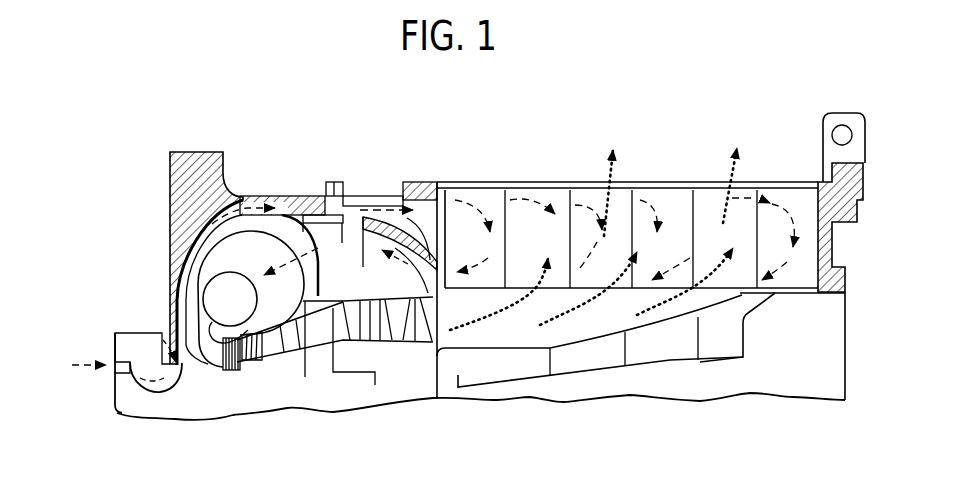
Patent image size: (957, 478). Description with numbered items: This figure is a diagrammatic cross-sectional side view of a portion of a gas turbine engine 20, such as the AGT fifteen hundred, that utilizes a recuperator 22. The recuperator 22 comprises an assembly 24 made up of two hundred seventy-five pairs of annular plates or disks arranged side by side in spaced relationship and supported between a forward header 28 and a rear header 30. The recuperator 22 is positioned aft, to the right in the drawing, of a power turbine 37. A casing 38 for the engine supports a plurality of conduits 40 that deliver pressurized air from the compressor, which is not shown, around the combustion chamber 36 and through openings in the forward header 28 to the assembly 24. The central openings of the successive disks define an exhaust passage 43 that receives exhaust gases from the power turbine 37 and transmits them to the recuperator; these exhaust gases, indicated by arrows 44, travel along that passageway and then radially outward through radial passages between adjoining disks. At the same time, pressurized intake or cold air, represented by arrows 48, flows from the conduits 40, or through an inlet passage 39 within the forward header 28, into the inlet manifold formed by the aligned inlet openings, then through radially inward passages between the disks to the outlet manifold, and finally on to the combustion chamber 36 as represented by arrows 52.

The gas turbine engine 20 is at (298, 112).
The recuperator 22 is at (669, 108).
The assembly 24 is at (560, 185).
The forward header 28 is at (432, 182).
The rear header 30 is at (843, 200).
The combustion chamber 36 is at (212, 298).
The power turbine 37 is at (398, 345).
The casing 38 is at (195, 150).
The inlet passage 39 is at (427, 182).
The conduits 40 is at (158, 388).
The exhaust passage 43 is at (733, 290).
The exhaust gases arrows 44 is at (490, 318).
The pressurized intake air arrows 48 is at (246, 185).
The combustion chamber air flow arrows 52 is at (374, 246).